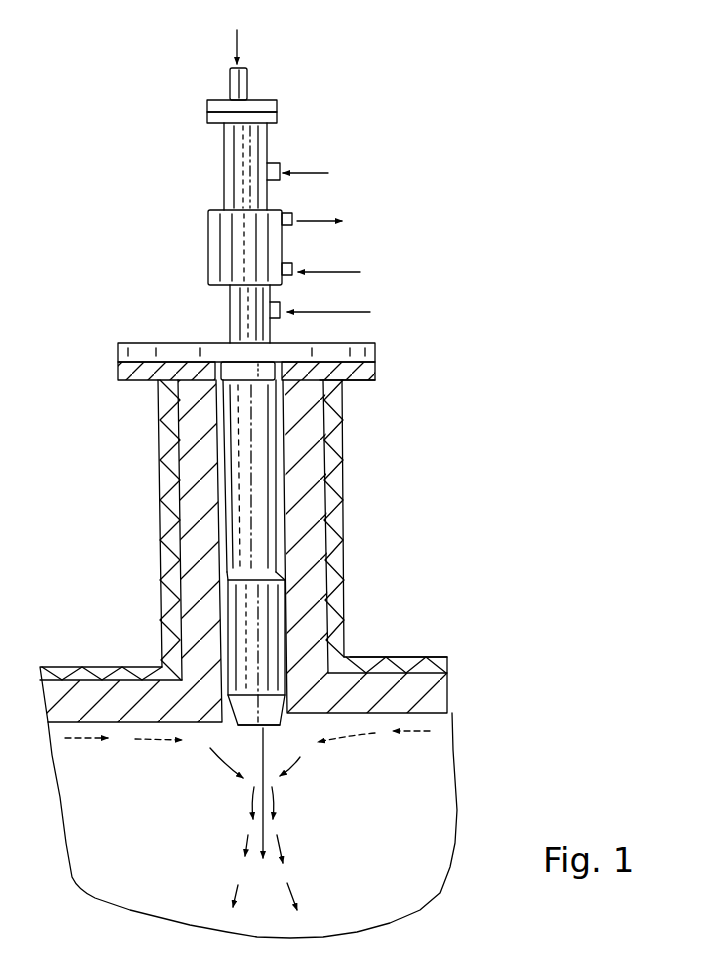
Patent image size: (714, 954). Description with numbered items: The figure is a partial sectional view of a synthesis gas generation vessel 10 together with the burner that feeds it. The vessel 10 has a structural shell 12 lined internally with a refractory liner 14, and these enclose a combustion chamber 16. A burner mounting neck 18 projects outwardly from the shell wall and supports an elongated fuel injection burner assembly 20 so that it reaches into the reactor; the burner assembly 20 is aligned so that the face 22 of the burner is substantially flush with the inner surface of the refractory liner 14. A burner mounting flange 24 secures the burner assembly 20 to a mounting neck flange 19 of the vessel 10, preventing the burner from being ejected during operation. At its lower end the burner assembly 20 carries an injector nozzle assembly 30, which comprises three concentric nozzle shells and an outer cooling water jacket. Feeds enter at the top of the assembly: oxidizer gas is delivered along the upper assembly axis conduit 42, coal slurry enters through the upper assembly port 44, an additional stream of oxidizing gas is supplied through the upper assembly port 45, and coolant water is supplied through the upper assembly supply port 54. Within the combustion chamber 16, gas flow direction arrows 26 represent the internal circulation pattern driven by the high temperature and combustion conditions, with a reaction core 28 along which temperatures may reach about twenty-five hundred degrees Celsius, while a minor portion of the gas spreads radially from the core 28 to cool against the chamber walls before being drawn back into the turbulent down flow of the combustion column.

The synthesis gas generation vessel 10 is at (385, 605).
The structural shell 12 is at (86, 664).
The internal refractory liner 14 is at (445, 700).
The combustion chamber 16 is at (404, 874).
The burner mounting neck 18 is at (158, 478).
The mounting neck flange 19 is at (352, 380).
The fuel injection burner assembly 20 is at (250, 515).
The face of the burner 22 is at (282, 726).
The burner mounting flange 24 is at (135, 350).
The gas flow direction arrows 26 is at (252, 803).
The reaction core 28 is at (282, 922).
The injector nozzle assembly 30 is at (272, 640).
The upper assembly axis conduit 42 is at (250, 82).
The upper assembly port 44 is at (272, 163).
The upper assembly port 45 is at (282, 300).
The upper assembly supply port 54 is at (292, 266).